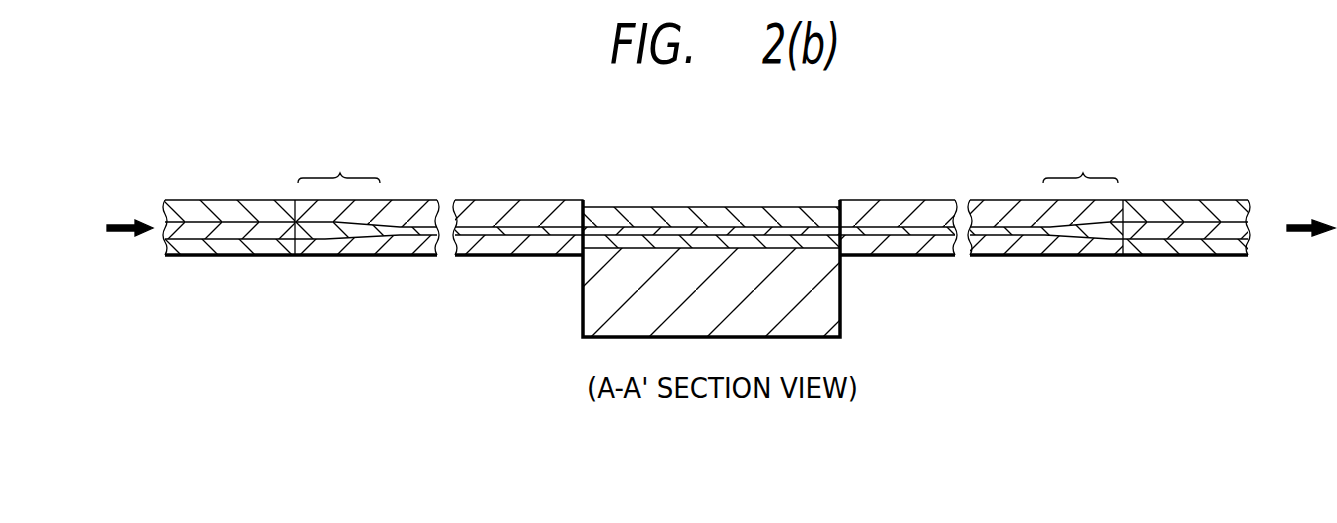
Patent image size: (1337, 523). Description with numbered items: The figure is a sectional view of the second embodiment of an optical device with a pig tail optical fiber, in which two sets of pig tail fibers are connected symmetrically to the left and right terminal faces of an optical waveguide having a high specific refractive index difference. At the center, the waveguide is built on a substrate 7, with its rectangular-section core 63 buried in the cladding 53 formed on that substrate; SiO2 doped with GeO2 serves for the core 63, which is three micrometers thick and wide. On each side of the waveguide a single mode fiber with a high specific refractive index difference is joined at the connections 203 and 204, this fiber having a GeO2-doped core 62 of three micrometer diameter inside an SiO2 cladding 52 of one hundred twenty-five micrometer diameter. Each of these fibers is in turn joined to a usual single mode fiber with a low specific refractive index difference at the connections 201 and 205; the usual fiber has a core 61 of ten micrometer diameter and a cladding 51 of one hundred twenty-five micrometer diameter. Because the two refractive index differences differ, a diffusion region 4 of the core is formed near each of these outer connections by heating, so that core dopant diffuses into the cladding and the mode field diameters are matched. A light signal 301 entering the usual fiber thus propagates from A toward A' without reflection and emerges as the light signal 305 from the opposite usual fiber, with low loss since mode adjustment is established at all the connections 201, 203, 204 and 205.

The diffusion region 4 is at (708, 158).
The substrate 7 is at (840, 323).
The cladding 51 is at (206, 257).
The cladding 52 is at (495, 210).
The cladding 53 is at (673, 212).
The core 61 is at (208, 228).
The core 62 is at (482, 257).
The core 63 is at (781, 231).
The connection 201 is at (303, 257).
The connection 203 is at (578, 248).
The connection 204 is at (838, 247).
The connection 205 is at (1118, 250).
The light signal 301 is at (118, 222).
The light signal 305 is at (1300, 220).